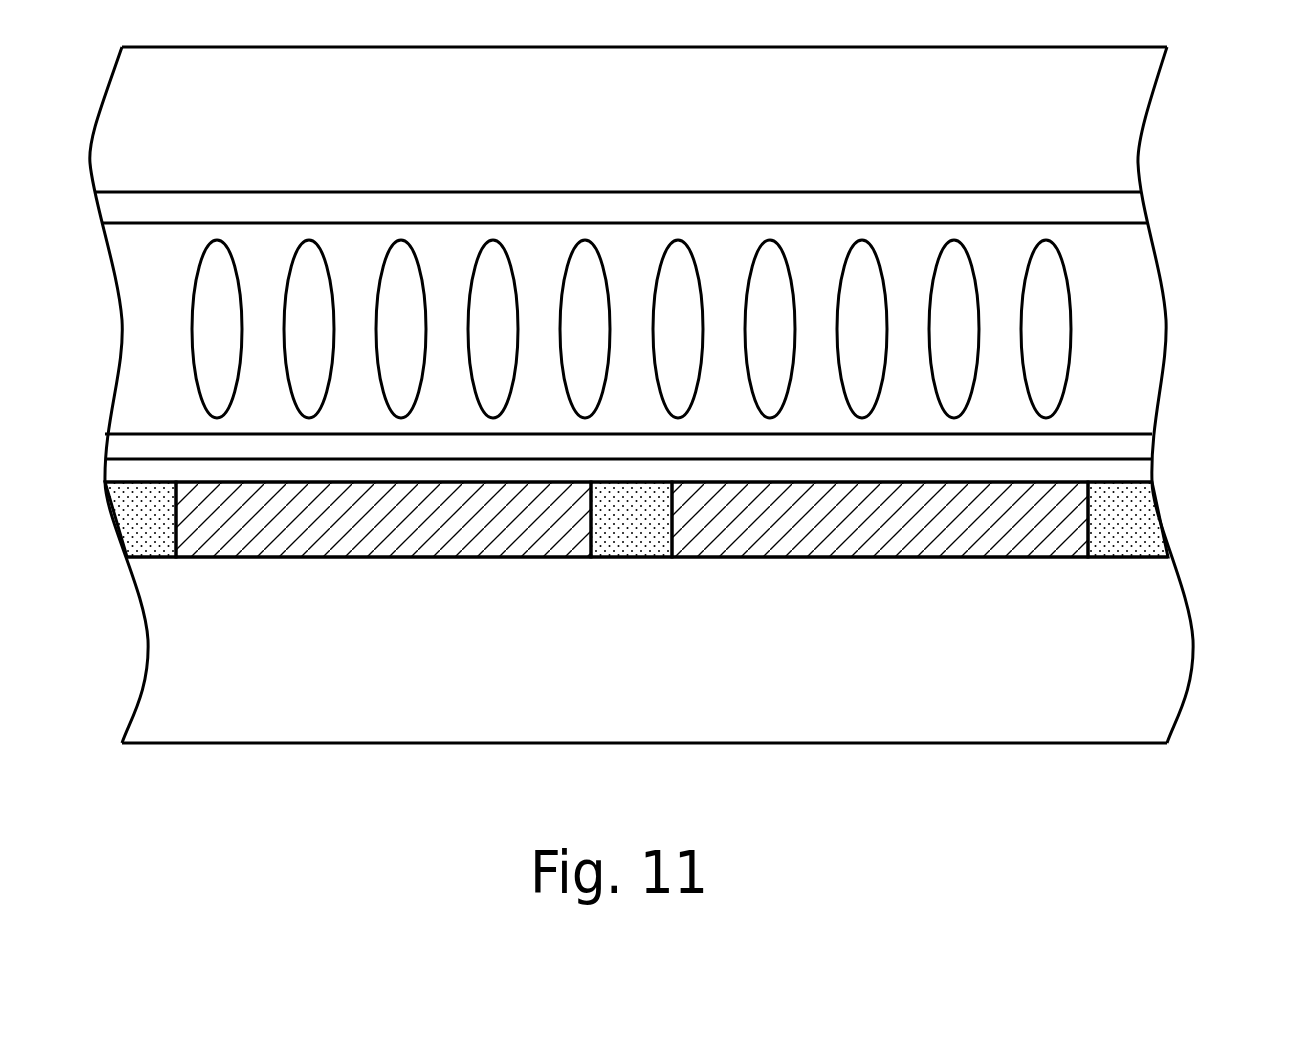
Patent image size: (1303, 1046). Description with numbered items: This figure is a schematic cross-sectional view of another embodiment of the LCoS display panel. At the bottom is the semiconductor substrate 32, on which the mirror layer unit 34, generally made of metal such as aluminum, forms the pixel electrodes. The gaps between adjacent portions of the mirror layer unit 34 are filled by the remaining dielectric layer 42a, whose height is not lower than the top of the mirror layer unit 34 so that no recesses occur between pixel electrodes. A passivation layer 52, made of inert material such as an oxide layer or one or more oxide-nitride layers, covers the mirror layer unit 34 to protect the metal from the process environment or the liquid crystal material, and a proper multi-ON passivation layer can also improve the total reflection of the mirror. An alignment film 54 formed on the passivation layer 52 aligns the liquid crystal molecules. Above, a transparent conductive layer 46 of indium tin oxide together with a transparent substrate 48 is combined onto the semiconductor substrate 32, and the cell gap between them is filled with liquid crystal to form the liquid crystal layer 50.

The transparent substrate 48 is at (643, 140).
The transparent conductive layer 46 is at (1128, 210).
The liquid crystal layer 50 is at (1143, 365).
The alignment film 54 is at (1137, 445).
The passivation layer 52 is at (1137, 470).
The dielectric layer 42a is at (1137, 522).
The mirror layer unit 34 is at (408, 537).
The semiconductor substrate 32 is at (643, 687).